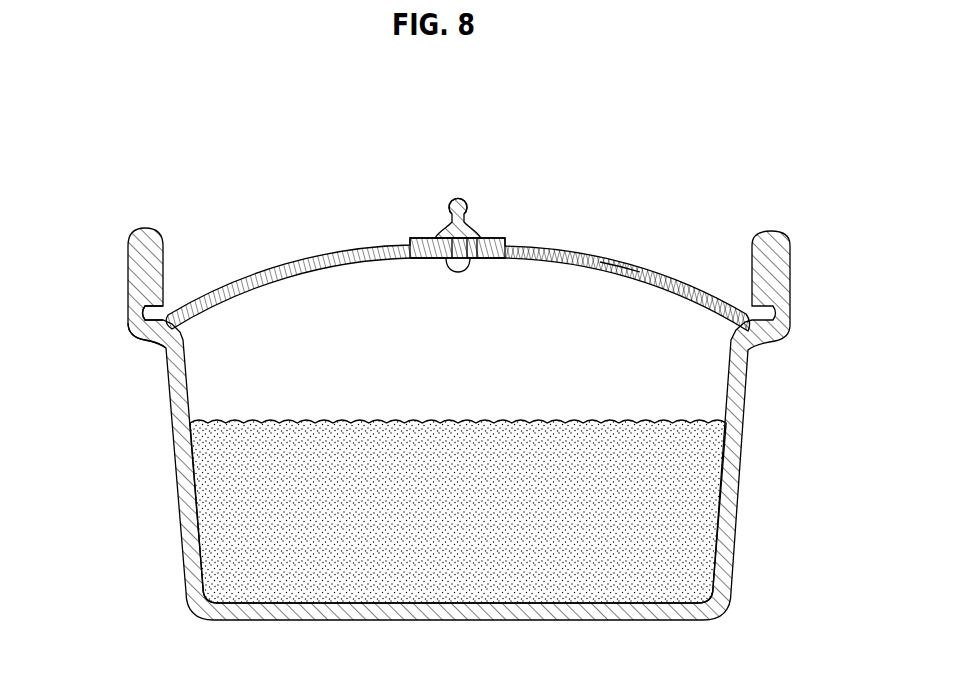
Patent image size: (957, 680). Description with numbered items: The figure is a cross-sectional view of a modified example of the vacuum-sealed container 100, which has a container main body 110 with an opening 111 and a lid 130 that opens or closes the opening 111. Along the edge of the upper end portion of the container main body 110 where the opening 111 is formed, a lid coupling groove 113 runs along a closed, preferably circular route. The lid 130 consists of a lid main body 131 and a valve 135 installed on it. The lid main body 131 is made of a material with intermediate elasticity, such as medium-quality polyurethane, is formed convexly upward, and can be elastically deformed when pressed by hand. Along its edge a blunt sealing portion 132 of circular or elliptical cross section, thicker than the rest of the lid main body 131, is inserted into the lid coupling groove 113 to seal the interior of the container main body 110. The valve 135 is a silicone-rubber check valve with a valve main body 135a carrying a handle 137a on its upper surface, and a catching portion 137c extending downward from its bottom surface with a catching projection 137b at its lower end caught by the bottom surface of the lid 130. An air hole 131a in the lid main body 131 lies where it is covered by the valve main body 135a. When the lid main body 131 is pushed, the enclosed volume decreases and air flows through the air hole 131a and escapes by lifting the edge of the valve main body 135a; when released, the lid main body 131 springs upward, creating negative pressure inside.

The vacuum-sealed container 100 is at (686, 168).
The container main body 110 is at (180, 495).
The lid coupling groove 113 is at (127, 306).
The sealing portion 132 is at (142, 340).
The lid 130 is at (233, 282).
The lid main body 131 is at (677, 283).
The opening 111 is at (612, 258).
The air hole 131a is at (506, 238).
The valve 135 is at (440, 228).
The valve main body 135a is at (420, 236).
The handle 137a is at (468, 200).
The catching projection 137b is at (423, 260).
The catching portion 137c is at (482, 260).